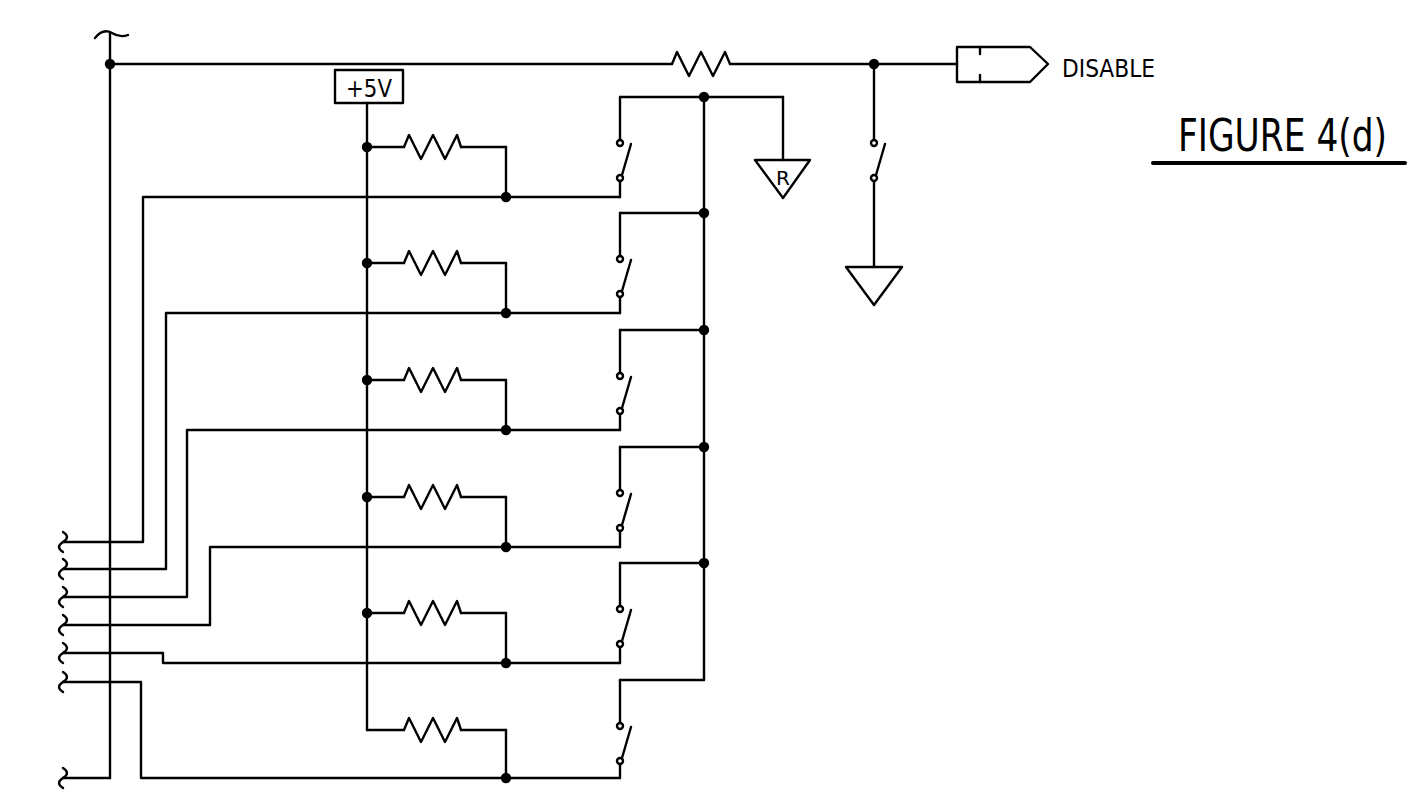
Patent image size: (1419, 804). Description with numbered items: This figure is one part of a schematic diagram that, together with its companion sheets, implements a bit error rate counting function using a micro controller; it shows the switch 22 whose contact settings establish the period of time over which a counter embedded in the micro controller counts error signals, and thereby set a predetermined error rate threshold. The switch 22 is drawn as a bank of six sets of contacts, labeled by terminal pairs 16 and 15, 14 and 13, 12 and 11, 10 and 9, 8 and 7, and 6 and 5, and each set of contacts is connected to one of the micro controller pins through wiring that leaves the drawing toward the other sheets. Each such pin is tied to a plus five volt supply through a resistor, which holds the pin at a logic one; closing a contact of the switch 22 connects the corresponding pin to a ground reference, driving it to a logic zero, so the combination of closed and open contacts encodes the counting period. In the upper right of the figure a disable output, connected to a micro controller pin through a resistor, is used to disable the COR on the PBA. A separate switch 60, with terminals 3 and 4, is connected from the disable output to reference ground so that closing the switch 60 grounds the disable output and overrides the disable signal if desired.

The switch 22 is at (668, 443).
The switch 60 is at (893, 184).
The disable switch terminal 3 is at (862, 105).
The disable switch terminal 4 is at (867, 205).
The DIP switch pin 5 is at (606, 752).
The DIP switch pin 6 is at (660, 704).
The DIP switch pin 7 is at (606, 636).
The DIP switch pin 8 is at (660, 587).
The DIP switch pin 9 is at (606, 520).
The DIP switch pin 10 is at (660, 471).
The DIP switch pin 11 is at (606, 403).
The DIP switch pin 12 is at (660, 354).
The DIP switch pin 13 is at (606, 286).
The DIP switch pin 14 is at (660, 237).
The DIP switch pin 15 is at (606, 170).
The DIP switch pin 16 is at (660, 121).